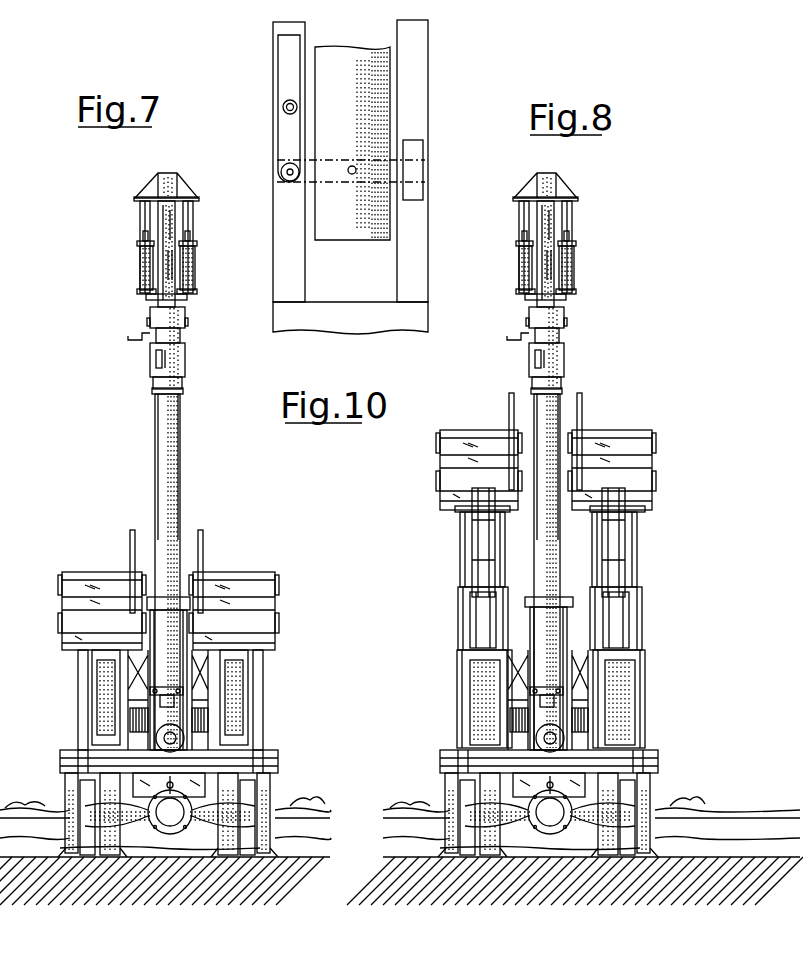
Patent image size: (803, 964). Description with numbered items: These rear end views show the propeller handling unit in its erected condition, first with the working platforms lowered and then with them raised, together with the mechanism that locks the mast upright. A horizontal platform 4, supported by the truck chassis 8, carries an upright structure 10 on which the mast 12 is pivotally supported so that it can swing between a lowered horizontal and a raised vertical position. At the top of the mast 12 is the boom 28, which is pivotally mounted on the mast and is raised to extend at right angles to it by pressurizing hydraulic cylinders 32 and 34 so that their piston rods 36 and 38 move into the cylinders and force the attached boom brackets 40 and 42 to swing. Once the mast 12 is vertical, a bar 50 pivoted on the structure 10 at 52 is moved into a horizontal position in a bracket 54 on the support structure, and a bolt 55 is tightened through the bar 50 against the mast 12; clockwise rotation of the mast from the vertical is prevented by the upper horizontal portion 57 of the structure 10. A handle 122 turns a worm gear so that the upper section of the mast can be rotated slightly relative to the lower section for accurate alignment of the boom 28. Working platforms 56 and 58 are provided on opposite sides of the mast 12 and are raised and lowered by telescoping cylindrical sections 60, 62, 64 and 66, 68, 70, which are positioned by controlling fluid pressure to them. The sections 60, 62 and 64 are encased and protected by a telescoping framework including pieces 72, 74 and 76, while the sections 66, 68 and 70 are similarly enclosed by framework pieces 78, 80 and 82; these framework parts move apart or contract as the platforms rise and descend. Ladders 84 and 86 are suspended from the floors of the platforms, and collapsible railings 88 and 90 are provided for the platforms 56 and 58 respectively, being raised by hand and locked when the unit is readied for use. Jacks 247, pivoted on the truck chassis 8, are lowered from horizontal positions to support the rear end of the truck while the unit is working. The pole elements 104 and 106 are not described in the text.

In FIG. 7, the horizontal platform 4 is at (278, 752).
In FIG. 10, the horizontal platform 4 is at (373, 312).
In FIG. 8, the horizontal platform 4 is at (658, 752).
In FIG. 7, the truck chassis 8 is at (205, 785).
In FIG. 8, the truck chassis 8 is at (585, 785).
In FIG. 7, the upright structure 10 is at (188, 632).
In FIG. 10, the upright structure 10 is at (431, 154).
In FIG. 8, the upright structure 10 is at (526, 614).
In FIG. 7, the mast 12 is at (158, 477).
In FIG. 10, the mast 12 is at (358, 242).
In FIG. 8, the mast 12 is at (562, 576).
In FIG. 7, the boom 28 is at (166, 172).
In FIG. 8, the boom 28 is at (546, 172).
In FIG. 7, the hydraulic cylinder 32 is at (140, 275).
In FIG. 8, the hydraulic cylinder 32 is at (519, 272).
In FIG. 7, the hydraulic cylinder 34 is at (195, 277).
In FIG. 8, the hydraulic cylinder 34 is at (574, 266).
In FIG. 7, the piston rod 36 is at (137, 243).
In FIG. 8, the piston rod 36 is at (516, 243).
In FIG. 7, the piston rod 38 is at (197, 243).
In FIG. 8, the piston rod 38 is at (576, 243).
In FIG. 7, the boom bracket 40 is at (140, 213).
In FIG. 8, the boom bracket 40 is at (519, 214).
In FIG. 7, the boom bracket 42 is at (193, 213).
In FIG. 8, the boom bracket 42 is at (572, 214).
In FIG. 7, the bar 50 is at (183, 692).
In FIG. 10, the bar 50 is at (305, 40).
In FIG. 8, the bar 50 is at (563, 692).
In FIG. 10, the pivot 52 is at (281, 170).
In FIG. 10, the bracket 54 is at (423, 200).
In FIG. 10, the bolt 55 is at (283, 107).
In FIG. 7, the working platform 56 is at (70, 655).
In FIG. 8, the working platform 56 is at (441, 618).
In FIG. 7, the upper horizontal portion 57 is at (203, 580).
In FIG. 8, the upper horizontal portion 57 is at (568, 598).
In FIG. 7, the working platform 58 is at (268, 655).
In FIG. 8, the working platform 58 is at (650, 605).
In FIG. 8, the telescoping cylindrical section 60 is at (473, 715).
In FIG. 8, the telescoping cylindrical section 62 is at (478, 638).
In FIG. 8, the telescoping cylindrical section 64 is at (480, 553).
In FIG. 8, the telescoping cylindrical section 66 is at (630, 694).
In FIG. 8, the telescoping cylindrical section 68 is at (614, 631).
In FIG. 8, the telescoping cylindrical section 70 is at (620, 553).
In FIG. 8, the framework piece 72 is at (458, 690).
In FIG. 8, the framework piece 74 is at (460, 615).
In FIG. 8, the framework piece 76 is at (460, 530).
In FIG. 8, the framework piece 78 is at (645, 673).
In FIG. 8, the framework piece 80 is at (642, 606).
In FIG. 8, the framework piece 82 is at (637, 533).
In FIG. 8, the ladder 84 is at (458, 495).
In FIG. 8, the ladder 86 is at (640, 520).
In FIG. 7, the collapsible railing 88 is at (62, 635).
In FIG. 8, the collapsible railing 88 is at (440, 440).
In FIG. 7, the collapsible railing 90 is at (276, 626).
In FIG. 8, the collapsible railing 90 is at (656, 438).
In FIG. 7, the inner mast tube 104 is at (158, 505).
In FIG. 8, the inner mast tube 104 is at (534, 410).
In FIG. 7, the outer mast tube 106 is at (181, 470).
In FIG. 8, the outer mast tube 106 is at (560, 400).
In FIG. 7, the handle 122 is at (128, 340).
In FIG. 8, the handle 122 is at (507, 340).
In FIG. 7, the jack 247 is at (62, 862).
In FIG. 8, the jack 247 is at (448, 862).